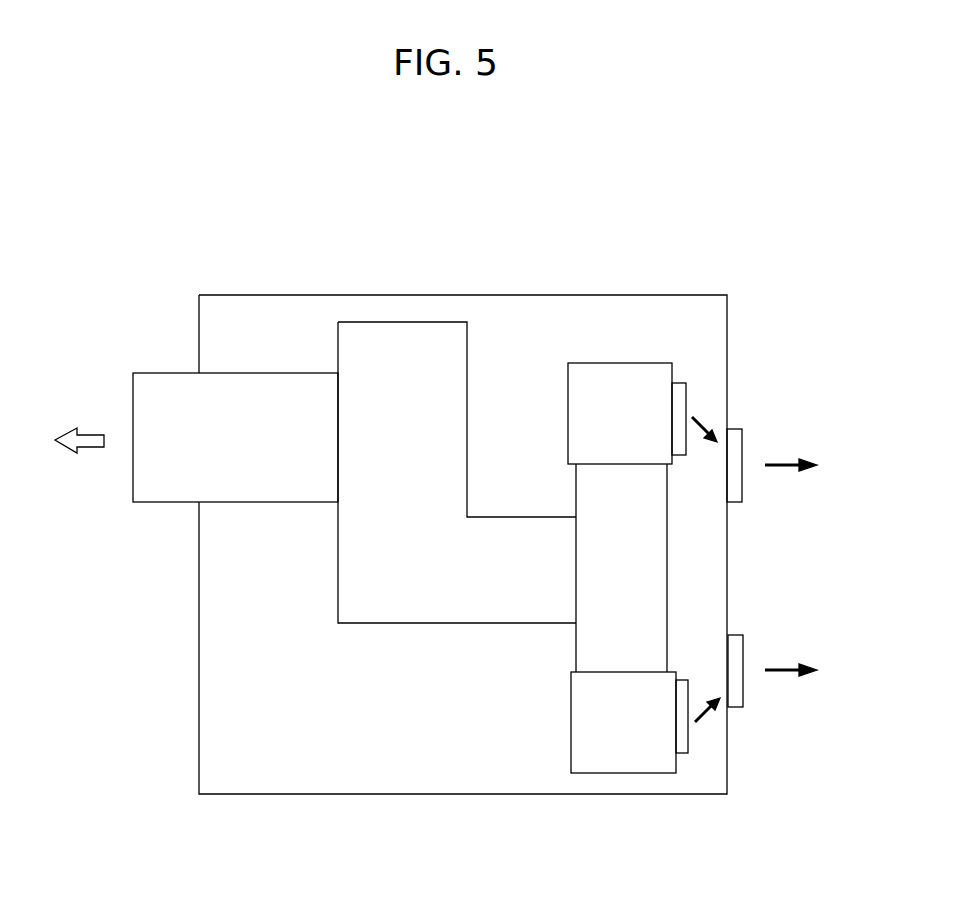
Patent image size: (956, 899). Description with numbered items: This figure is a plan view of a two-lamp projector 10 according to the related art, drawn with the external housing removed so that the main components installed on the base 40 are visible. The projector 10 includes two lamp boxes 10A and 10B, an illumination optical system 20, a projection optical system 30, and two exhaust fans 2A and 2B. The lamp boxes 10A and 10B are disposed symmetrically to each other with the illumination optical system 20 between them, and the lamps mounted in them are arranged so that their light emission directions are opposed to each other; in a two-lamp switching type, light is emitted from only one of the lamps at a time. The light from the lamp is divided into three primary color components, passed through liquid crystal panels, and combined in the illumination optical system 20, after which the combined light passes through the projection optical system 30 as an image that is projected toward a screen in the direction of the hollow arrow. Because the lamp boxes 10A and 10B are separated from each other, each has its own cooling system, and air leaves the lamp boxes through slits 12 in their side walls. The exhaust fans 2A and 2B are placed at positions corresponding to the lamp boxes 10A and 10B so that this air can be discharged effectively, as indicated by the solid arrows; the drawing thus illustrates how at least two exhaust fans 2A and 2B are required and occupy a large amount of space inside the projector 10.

The projector 10 is at (454, 131).
The base 40 is at (527, 318).
The projection optical system 30 is at (256, 392).
The illumination optical system 20 is at (410, 332).
The lamp box 10B is at (658, 354).
The lamp box 10A is at (632, 779).
The slits 12 is at (679, 395).
The exhaust fan 2B is at (737, 437).
The exhaust fan 2A is at (738, 642).